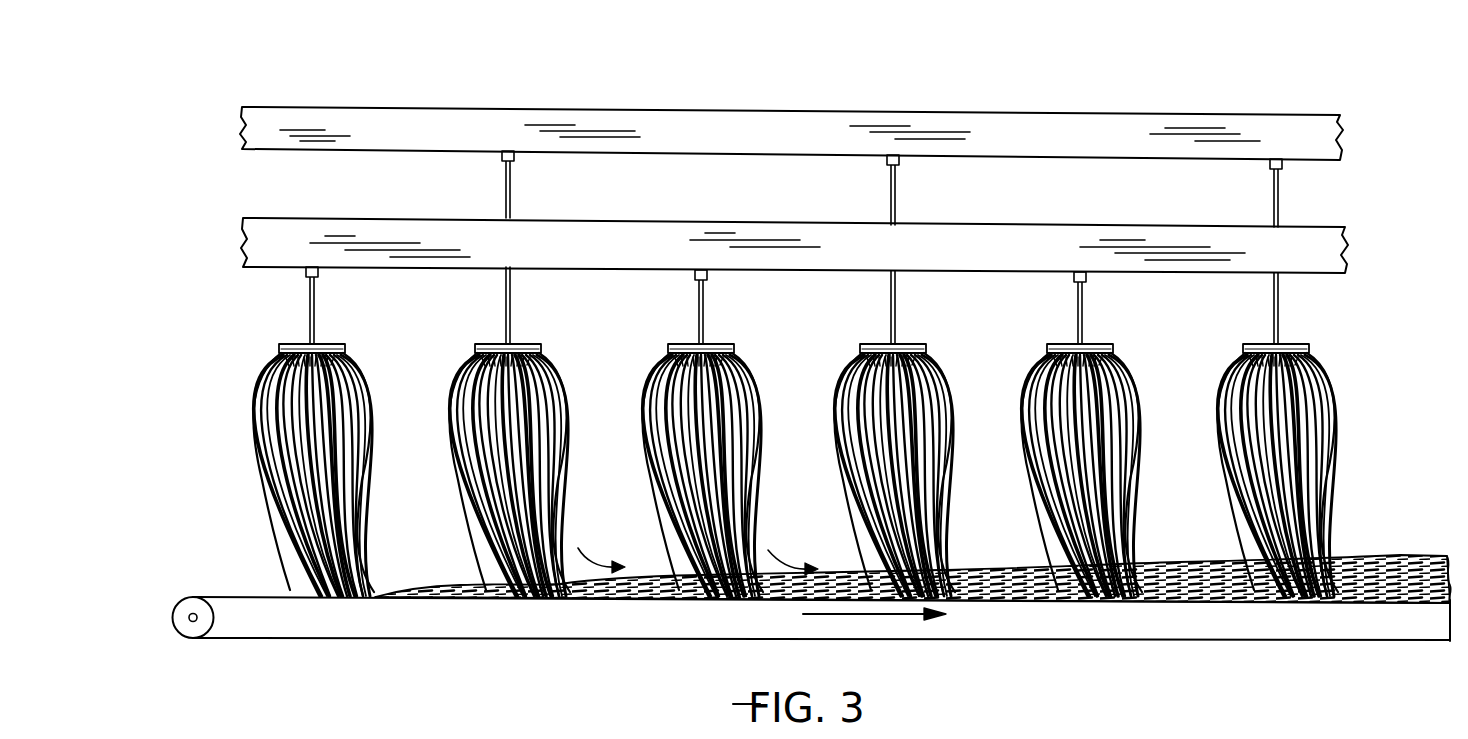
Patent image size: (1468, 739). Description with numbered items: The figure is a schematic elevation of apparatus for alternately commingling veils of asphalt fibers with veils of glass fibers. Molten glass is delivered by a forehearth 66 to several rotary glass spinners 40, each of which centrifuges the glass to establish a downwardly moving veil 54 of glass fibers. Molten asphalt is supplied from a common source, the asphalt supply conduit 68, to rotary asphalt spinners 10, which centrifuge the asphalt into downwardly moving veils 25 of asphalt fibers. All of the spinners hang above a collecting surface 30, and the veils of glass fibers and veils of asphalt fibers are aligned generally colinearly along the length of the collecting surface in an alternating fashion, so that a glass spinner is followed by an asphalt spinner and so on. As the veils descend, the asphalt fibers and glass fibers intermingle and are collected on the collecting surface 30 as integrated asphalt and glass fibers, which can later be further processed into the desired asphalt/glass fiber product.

The asphalt supply conduit 68 is at (586, 107).
The forehearth 66 is at (380, 218).
The rotary glass spinner 40 is at (338, 344).
The rotary asphalt spinner 10 is at (544, 344).
The veil of glass fibers 54 is at (380, 392).
The veil of asphalt fibers 25 is at (548, 528).
The collecting surface 30 is at (1228, 643).